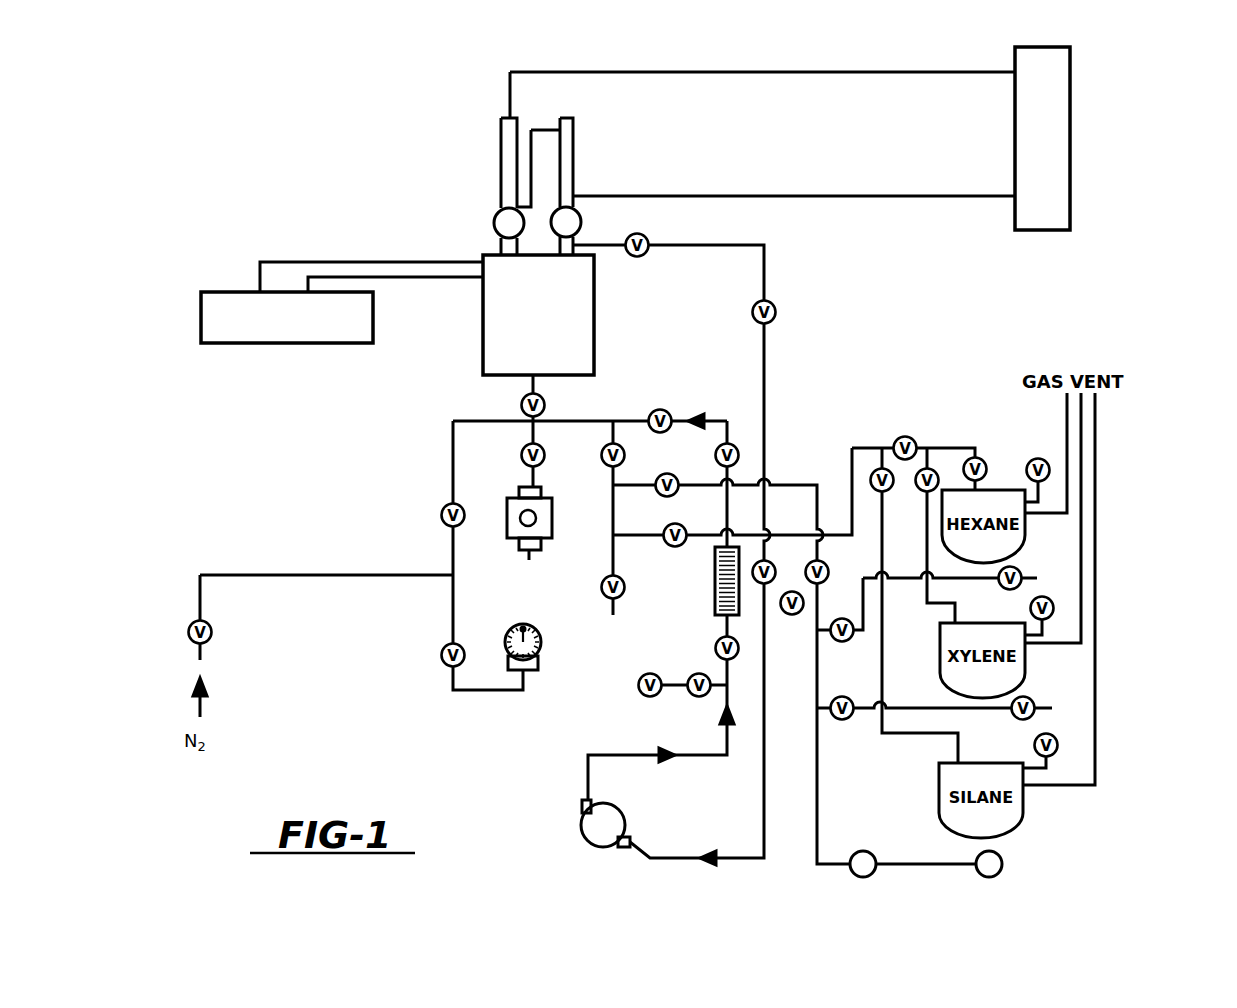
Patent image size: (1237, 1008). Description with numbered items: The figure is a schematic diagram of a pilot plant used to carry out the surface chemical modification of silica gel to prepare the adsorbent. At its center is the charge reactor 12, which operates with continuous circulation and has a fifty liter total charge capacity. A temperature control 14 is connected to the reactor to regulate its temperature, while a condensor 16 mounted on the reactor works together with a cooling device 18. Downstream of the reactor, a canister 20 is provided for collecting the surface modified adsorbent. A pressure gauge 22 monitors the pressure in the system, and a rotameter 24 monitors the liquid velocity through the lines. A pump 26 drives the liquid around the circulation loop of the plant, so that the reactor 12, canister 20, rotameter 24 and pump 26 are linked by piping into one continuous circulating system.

The charge reactor 12 is at (534, 362).
The temperature control 14 is at (272, 343).
The condensor 16 is at (494, 222).
The cooling device 18 is at (1047, 137).
The canister 20 is at (552, 522).
The pressure gauge 22 is at (543, 637).
The rotameter 24 is at (715, 580).
The pump 26 is at (580, 826).